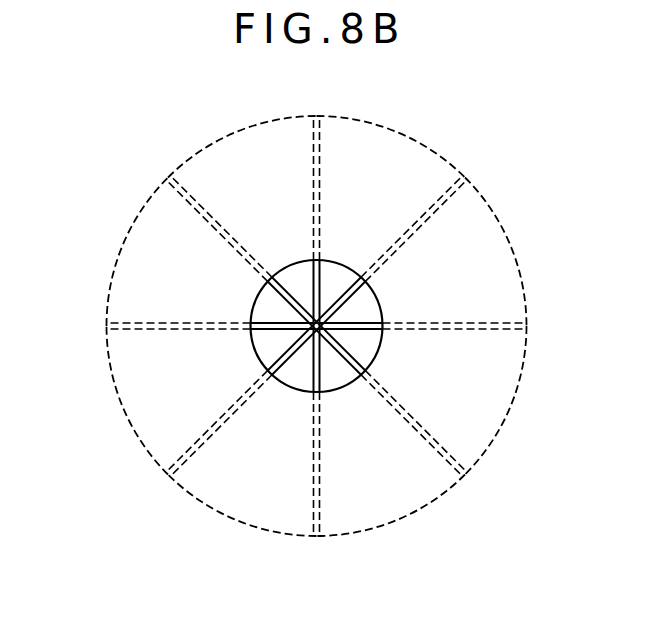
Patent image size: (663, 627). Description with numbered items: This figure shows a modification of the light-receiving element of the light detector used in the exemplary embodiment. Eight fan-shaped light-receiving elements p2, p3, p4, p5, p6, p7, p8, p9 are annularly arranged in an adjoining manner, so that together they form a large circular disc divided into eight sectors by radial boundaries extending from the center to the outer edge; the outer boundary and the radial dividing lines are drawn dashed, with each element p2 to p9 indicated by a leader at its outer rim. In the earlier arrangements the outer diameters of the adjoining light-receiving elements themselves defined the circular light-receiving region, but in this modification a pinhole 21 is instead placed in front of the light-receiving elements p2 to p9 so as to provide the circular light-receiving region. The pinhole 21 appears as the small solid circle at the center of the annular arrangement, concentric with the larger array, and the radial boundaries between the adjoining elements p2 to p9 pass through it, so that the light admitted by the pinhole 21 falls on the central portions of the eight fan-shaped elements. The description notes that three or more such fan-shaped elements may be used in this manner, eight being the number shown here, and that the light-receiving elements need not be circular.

The pinhole 21 is at (380, 299).
The light-receiving element p2 is at (398, 128).
The light-receiving element p3 is at (515, 247).
The light-receiving element p4 is at (512, 412).
The light-receiving element p5 is at (395, 523).
The light-receiving element p6 is at (237, 522).
The light-receiving element p7 is at (120, 407).
The light-receiving element p8 is at (123, 243).
The light-receiving element p9 is at (242, 128).